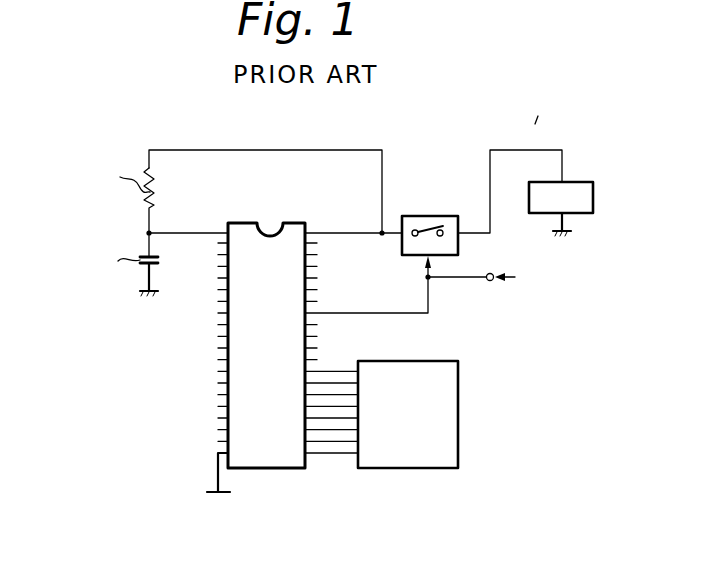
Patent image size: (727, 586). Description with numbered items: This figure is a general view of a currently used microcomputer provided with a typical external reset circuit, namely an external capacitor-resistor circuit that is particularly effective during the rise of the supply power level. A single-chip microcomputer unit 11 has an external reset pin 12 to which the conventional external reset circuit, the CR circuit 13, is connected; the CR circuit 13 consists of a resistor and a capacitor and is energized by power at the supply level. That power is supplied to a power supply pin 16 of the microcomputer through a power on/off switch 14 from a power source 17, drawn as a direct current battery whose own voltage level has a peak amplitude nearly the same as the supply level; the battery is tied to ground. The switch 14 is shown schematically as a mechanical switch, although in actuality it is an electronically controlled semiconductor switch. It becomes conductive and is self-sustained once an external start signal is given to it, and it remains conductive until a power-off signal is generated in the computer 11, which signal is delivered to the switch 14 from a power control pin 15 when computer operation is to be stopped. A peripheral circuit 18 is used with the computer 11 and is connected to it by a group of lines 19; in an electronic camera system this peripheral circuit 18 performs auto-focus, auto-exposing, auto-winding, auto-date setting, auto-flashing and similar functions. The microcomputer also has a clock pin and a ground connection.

The single-chip microcomputer unit 11 is at (288, 221).
The external reset pin 12 is at (226, 221).
The CR circuit 13 is at (116, 223).
The power on/off switch 14 is at (429, 215).
The power control pin 15 is at (309, 312).
The power supply pin 16 is at (314, 231).
The power source 17 is at (594, 199).
The peripheral circuit 18 is at (459, 425).
The bus lines 19 is at (313, 371).